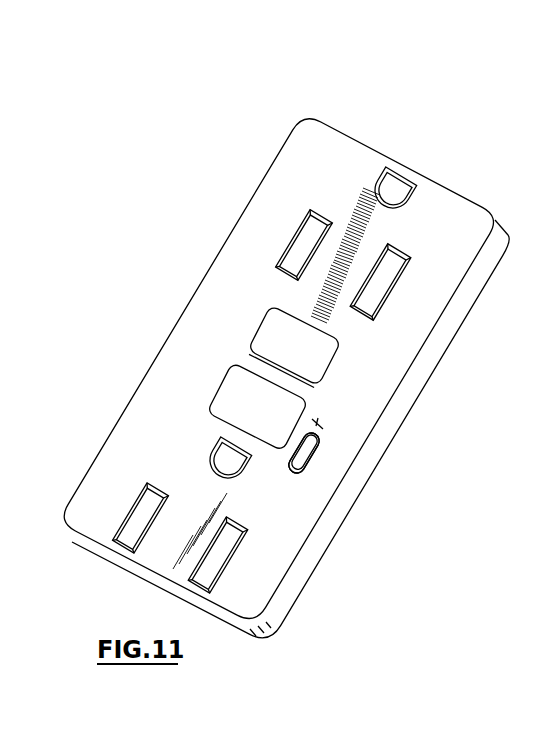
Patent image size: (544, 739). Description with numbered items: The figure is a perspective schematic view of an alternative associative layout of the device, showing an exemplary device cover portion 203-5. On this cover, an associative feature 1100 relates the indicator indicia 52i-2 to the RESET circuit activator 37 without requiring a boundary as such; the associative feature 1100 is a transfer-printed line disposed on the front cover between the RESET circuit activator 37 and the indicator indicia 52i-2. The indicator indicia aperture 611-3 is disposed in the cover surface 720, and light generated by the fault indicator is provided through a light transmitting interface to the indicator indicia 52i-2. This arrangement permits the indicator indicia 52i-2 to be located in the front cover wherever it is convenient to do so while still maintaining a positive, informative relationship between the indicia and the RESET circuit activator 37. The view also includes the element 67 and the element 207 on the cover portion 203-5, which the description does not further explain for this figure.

The electrical wiring device (GFCI receptacle) 203-5 is at (240, 112).
The cover face 720 is at (463, 223).
The test button 67 is at (270, 322).
The reset button 37 is at (215, 400).
The indicator aperture 1100 is at (322, 430).
The LED indicator 611-3 is at (318, 452).
The indicator lamp 52i-2 is at (313, 457).
The cover side wall 207 is at (245, 553).